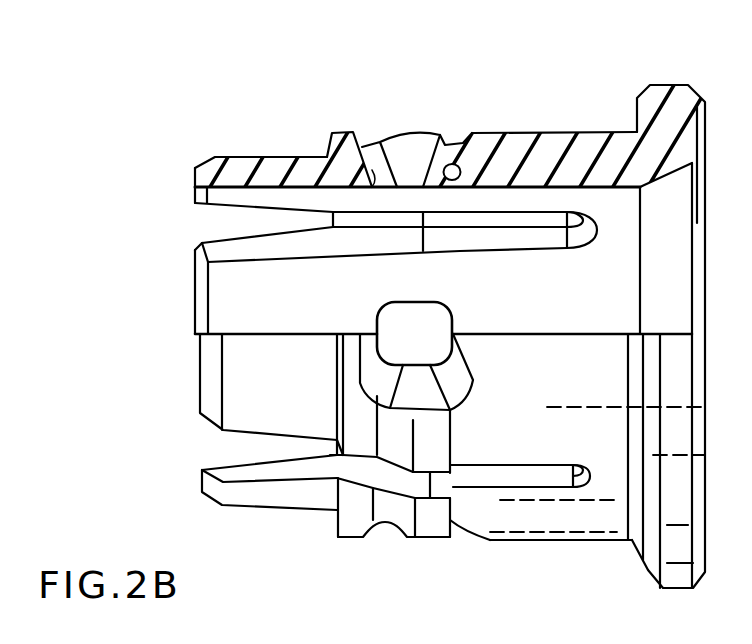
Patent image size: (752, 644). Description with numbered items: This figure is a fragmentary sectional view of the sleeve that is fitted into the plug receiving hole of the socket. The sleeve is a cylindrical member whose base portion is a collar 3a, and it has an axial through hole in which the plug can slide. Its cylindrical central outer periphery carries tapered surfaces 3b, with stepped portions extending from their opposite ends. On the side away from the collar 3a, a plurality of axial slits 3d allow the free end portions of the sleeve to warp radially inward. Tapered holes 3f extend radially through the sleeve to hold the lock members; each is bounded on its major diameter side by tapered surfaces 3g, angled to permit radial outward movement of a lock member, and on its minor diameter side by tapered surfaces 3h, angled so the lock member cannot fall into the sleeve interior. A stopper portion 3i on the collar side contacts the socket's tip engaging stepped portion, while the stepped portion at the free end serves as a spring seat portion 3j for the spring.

The collar 3a is at (669, 90).
The tapered surfaces 3b is at (398, 508).
The slits 3d is at (217, 213).
The tapered holes 3f is at (447, 150).
The tapered surfaces on the major diameter side 3g is at (456, 166).
The tapered surfaces on the minor diameter side 3h is at (401, 148).
The stopper portion 3i is at (457, 437).
The spring seat portion 3j is at (332, 147).